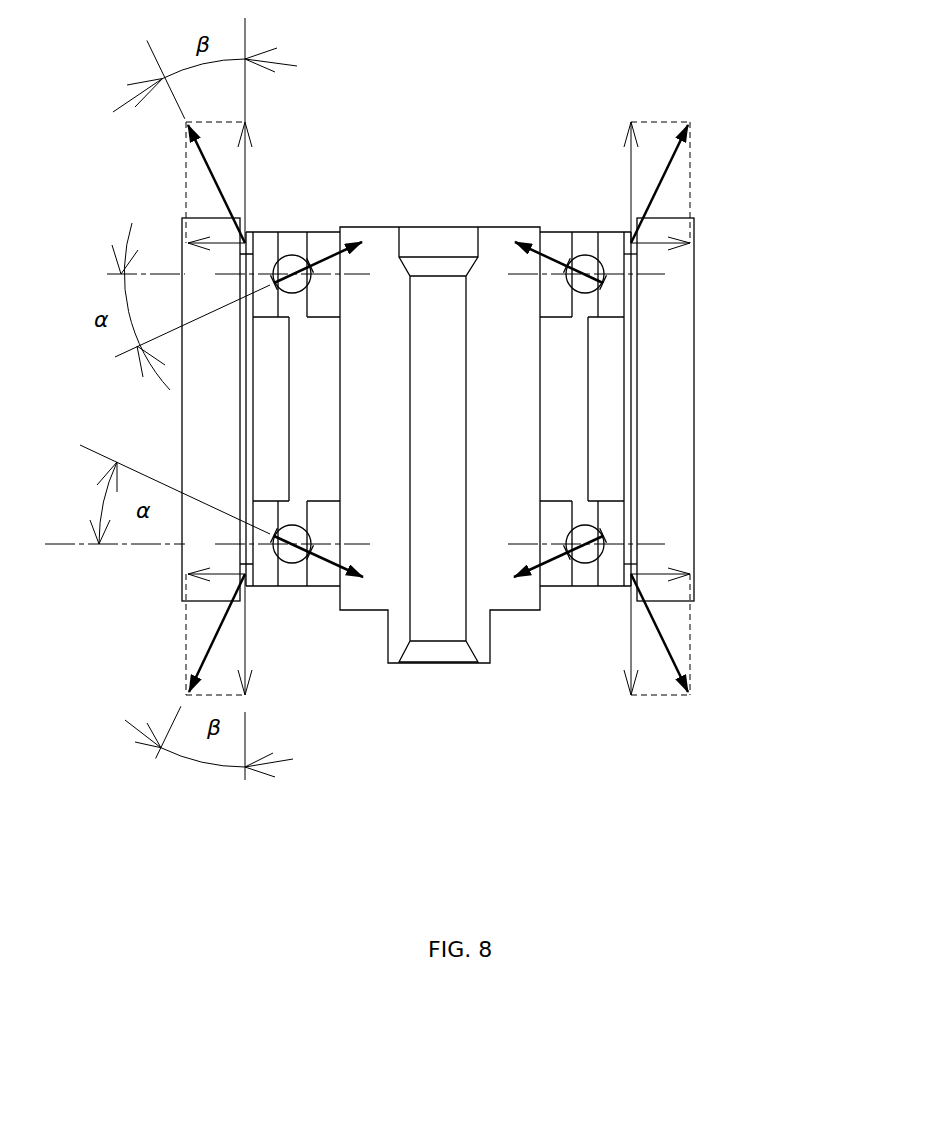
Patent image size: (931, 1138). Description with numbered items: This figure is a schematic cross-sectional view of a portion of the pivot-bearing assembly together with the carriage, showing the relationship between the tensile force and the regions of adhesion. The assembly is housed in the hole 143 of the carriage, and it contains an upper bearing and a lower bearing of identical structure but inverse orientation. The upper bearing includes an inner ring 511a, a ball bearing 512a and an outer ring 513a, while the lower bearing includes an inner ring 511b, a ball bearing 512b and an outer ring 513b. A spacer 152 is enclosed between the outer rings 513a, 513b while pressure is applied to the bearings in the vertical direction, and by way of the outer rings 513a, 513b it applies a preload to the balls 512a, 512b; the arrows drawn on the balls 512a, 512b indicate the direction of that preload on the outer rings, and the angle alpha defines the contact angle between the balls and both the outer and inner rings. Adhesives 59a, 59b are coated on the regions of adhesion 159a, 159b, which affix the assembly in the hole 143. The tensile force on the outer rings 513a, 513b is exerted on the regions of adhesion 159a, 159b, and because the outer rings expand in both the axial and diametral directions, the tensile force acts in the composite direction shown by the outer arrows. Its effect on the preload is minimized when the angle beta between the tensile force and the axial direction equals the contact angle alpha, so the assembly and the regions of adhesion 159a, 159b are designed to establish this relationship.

The adhesive 59a is at (252, 231).
The adhesive 59b is at (252, 590).
The inner ring 511a is at (549, 230).
The ball bearing 512a is at (590, 252).
The outer ring 513a is at (607, 231).
The inner ring 511b is at (548, 588).
The ball bearing 512b is at (578, 568).
The outer ring 513b is at (610, 588).
The region of adhesion 159a is at (625, 247).
The region of adhesion 159b is at (638, 563).
The spacer 152 is at (625, 358).
The hole 143 is at (638, 430).